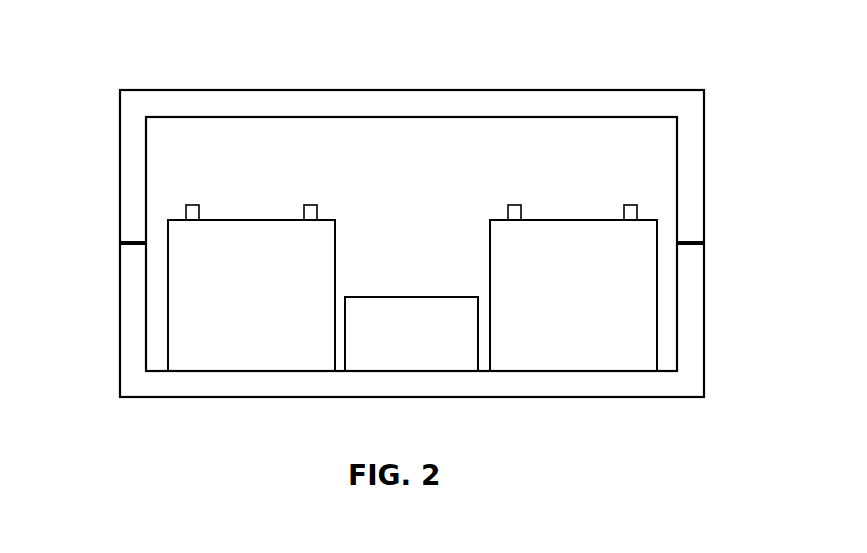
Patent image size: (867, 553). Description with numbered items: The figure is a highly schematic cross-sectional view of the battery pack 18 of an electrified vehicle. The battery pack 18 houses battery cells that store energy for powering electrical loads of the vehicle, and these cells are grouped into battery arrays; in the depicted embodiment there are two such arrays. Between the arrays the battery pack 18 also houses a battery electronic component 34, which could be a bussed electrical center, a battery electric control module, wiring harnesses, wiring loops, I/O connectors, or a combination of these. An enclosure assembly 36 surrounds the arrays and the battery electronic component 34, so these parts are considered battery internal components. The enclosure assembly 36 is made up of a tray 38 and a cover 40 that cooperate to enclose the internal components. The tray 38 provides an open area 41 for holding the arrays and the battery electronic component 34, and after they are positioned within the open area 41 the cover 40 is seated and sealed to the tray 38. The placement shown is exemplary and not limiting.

The battery pack 18 is at (675, 47).
The battery electronic component 34 is at (458, 347).
The enclosure assembly 36 is at (103, 136).
The tray 38 is at (222, 385).
The cover 40 is at (193, 98).
The open area 41 is at (425, 283).